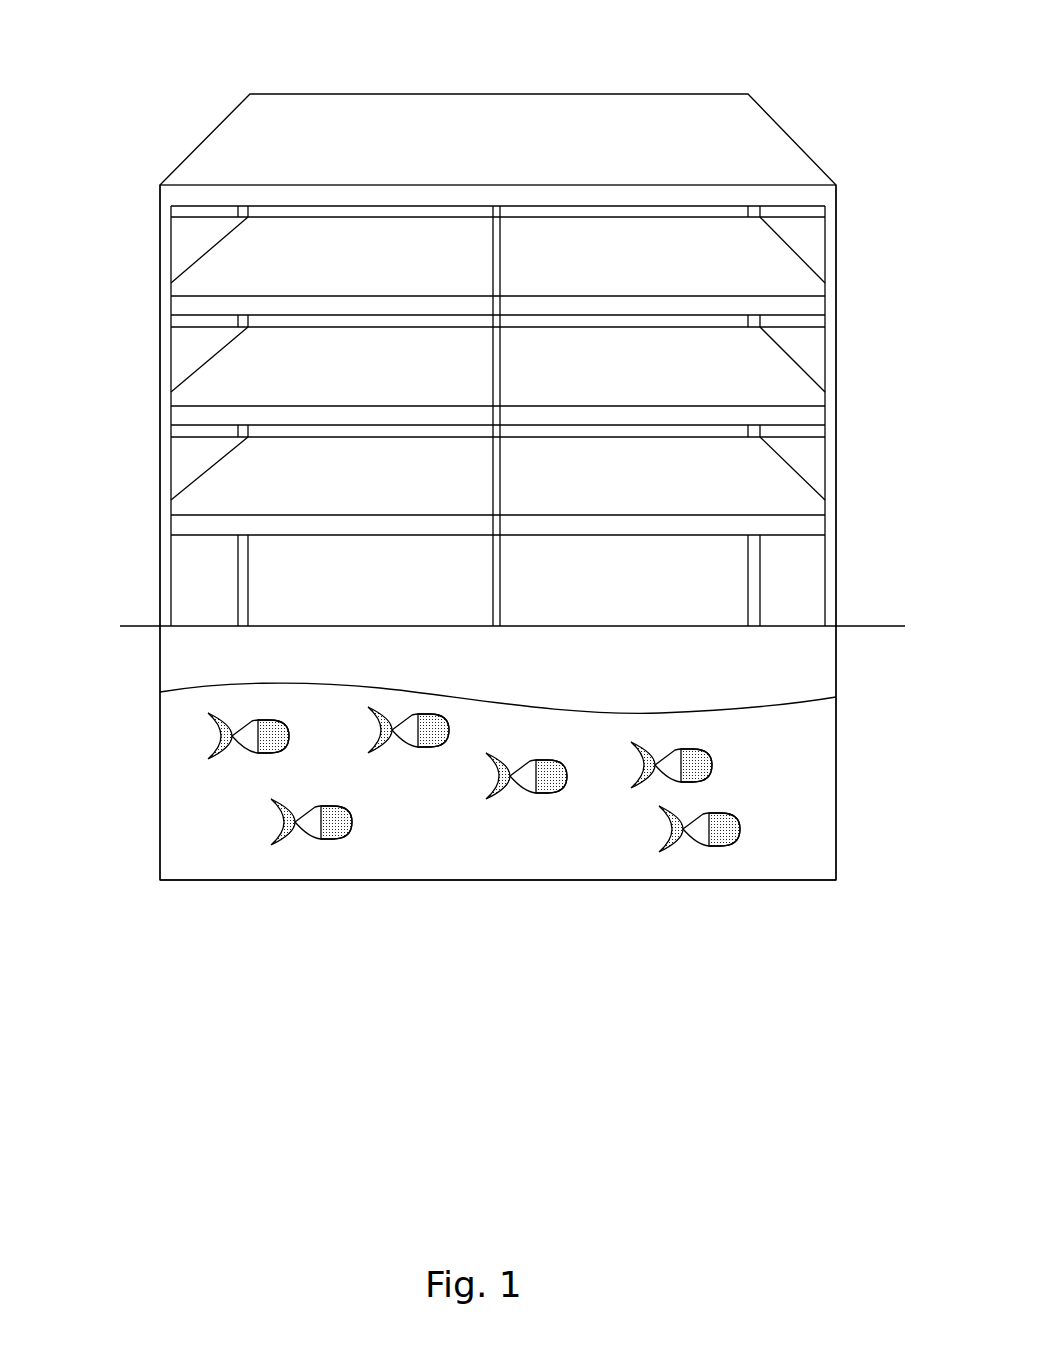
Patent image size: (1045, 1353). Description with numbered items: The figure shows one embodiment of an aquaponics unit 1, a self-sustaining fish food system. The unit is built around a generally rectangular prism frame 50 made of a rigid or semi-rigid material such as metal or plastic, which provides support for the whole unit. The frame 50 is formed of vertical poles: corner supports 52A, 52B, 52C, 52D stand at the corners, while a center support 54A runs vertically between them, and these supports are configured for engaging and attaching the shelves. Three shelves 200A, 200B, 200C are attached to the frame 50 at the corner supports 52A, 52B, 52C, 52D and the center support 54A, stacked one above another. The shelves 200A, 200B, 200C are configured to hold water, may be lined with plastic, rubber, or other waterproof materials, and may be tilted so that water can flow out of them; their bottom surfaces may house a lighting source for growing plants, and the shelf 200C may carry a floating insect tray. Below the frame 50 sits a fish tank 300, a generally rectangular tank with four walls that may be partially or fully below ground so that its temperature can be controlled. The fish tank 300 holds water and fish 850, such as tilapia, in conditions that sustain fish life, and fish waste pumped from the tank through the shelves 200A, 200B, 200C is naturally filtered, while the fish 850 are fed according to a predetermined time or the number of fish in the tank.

The aquaponics unit 1 is at (150, 57).
The frame 50 is at (842, 244).
The frame corner support 52A is at (840, 353).
The frame corner support 52B is at (763, 578).
The frame corner support 52C is at (157, 572).
The frame corner support 52D is at (236, 604).
The frame center support 54A is at (503, 578).
The shelf 200A is at (205, 290).
The shelf 200B is at (205, 400).
The shelf 200C is at (205, 510).
The fish tank 300 is at (157, 823).
The fish 850 is at (475, 781).